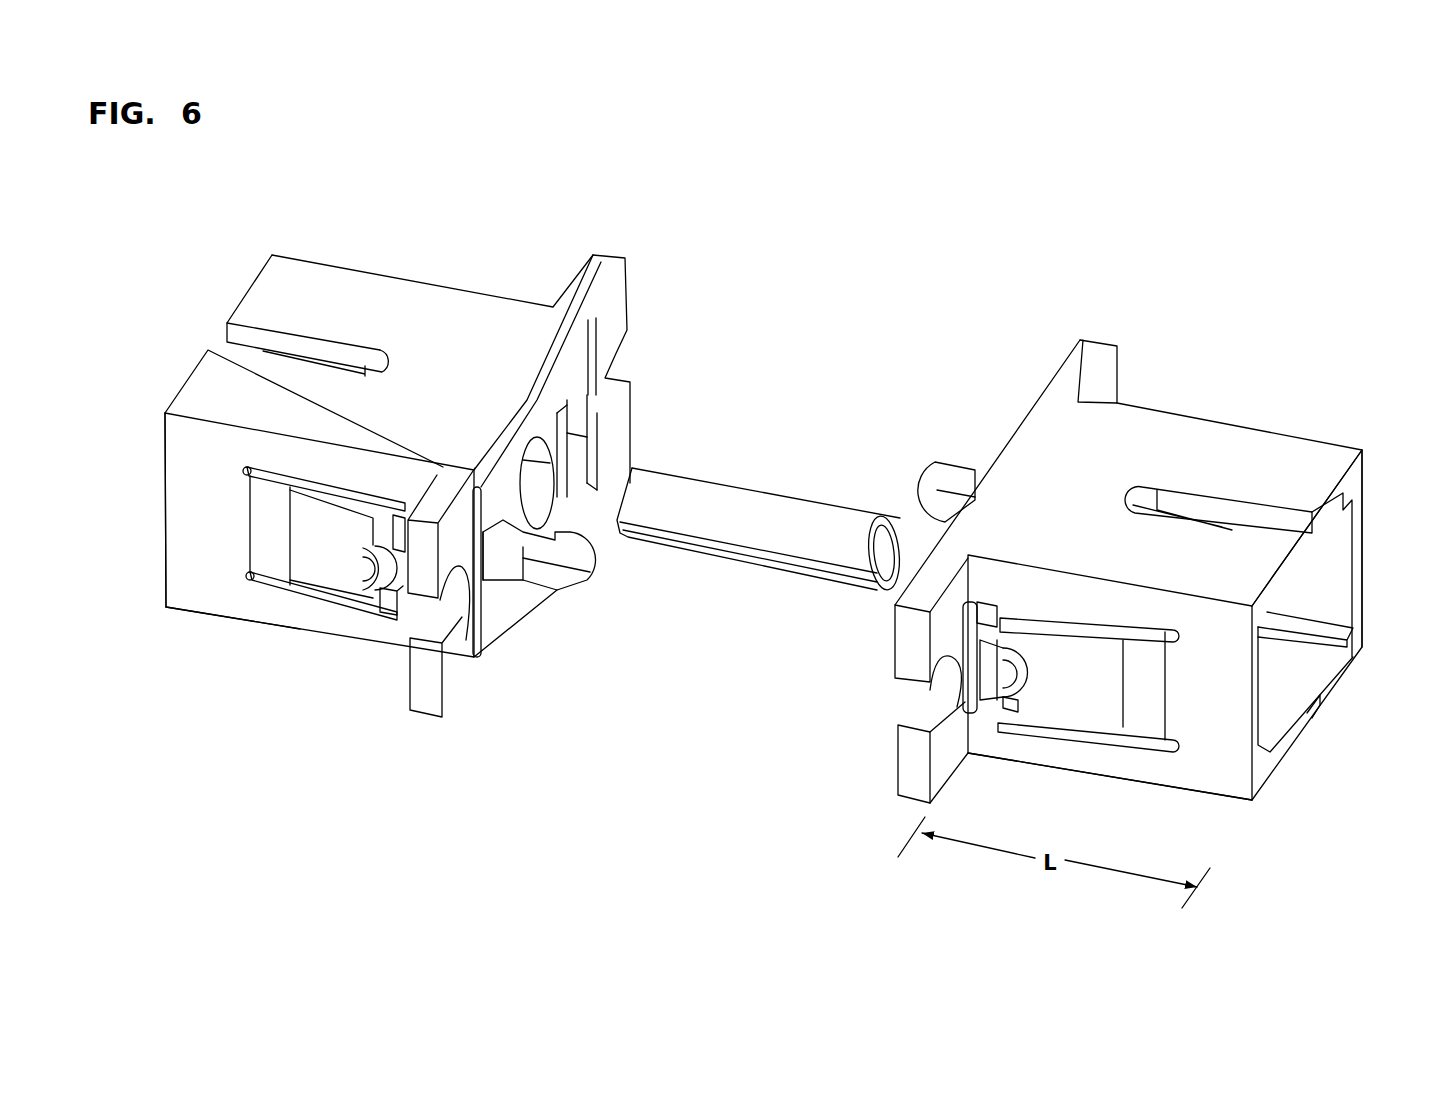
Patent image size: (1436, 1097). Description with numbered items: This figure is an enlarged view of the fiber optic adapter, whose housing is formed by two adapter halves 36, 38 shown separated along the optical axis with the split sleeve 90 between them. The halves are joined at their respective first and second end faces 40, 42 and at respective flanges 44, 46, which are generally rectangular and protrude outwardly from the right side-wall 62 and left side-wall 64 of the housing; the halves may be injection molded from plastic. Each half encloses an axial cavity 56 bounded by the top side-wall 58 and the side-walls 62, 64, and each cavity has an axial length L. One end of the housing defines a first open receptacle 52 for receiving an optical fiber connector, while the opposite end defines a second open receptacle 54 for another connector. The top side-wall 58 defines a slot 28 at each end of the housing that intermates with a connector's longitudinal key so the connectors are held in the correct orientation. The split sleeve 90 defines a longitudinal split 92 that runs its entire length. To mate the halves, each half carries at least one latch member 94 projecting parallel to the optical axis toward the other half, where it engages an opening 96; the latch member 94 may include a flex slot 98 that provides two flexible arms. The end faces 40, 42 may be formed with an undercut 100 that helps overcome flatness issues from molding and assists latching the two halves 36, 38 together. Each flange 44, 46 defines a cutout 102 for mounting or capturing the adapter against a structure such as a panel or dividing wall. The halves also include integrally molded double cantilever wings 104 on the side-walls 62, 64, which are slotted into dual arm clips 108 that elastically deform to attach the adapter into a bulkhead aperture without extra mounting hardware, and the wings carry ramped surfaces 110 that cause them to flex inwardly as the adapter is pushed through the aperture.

The slot 28 is at (287, 345).
The first adapter half 36 is at (1088, 790).
The second adapter half 38 is at (295, 630).
The first end face 40 is at (1050, 385).
The second end face 42 is at (465, 663).
The flange 44 is at (632, 413).
The flange 46 is at (433, 712).
The first open receptacle 52 is at (1292, 668).
The second open receptacle 54 is at (197, 341).
The axial cavity 56 is at (1310, 580).
The top side-wall 58 is at (372, 295).
The right side-wall 62 is at (210, 588).
The left side-wall 64 is at (1200, 768).
The split sleeve 90 is at (733, 505).
The longitudinal split 92 is at (660, 528).
The latch member 94 is at (550, 603).
The opening 96 is at (582, 418).
The flex slot 98 is at (573, 567).
The undercut 100 is at (627, 330).
The cutout 102 is at (625, 360).
The double cantilever wings 104 is at (338, 499).
The dual arm clips 108 is at (380, 610).
The ramped surfaces 110 is at (346, 564).